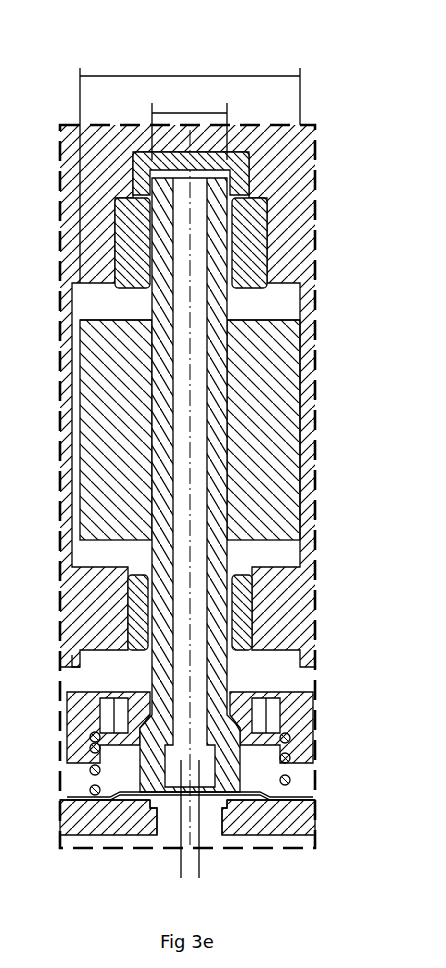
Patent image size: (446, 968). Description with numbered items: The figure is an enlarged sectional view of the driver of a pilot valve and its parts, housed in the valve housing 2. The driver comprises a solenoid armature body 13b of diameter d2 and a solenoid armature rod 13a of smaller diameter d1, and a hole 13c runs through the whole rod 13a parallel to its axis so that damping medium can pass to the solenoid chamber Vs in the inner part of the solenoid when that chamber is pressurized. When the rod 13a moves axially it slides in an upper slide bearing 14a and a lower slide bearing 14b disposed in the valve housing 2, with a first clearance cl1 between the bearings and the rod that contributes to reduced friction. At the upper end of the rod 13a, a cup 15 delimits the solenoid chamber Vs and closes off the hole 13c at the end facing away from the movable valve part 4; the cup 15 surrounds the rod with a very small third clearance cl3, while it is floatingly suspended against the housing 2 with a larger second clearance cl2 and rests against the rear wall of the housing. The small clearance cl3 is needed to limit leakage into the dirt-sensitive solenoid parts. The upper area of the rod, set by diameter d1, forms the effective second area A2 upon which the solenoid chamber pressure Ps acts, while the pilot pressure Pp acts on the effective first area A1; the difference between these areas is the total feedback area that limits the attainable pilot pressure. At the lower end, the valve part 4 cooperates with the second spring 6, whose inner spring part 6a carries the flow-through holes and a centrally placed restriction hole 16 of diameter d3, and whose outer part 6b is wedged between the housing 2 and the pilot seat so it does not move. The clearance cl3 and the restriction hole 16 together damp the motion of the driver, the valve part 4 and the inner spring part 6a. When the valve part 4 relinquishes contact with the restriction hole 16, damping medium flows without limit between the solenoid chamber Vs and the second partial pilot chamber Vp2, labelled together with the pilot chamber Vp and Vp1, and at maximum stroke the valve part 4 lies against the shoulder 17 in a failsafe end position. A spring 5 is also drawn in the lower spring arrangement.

The valve housing 2 is at (63, 128).
The valve part 4 is at (203, 790).
The spring 5 is at (290, 758).
The second spring 6 is at (316, 799).
The inner spring part 6a is at (262, 808).
The outer part of the second spring 6b is at (300, 801).
The solenoid armature rod 13a is at (217, 325).
The solenoid armature body 13b is at (263, 377).
The hole 13c is at (193, 437).
The upper slide bearing 14a is at (247, 240).
The lower slide bearing 14b is at (238, 612).
The cup 15 is at (232, 152).
The restriction hole 16 is at (233, 773).
The shoulder 17 is at (70, 664).
The effective first area A1 is at (207, 803).
The effective second area A2 is at (218, 176).
The first clearance cl1 is at (266, 236).
The second clearance cl2 is at (243, 170).
The third clearance cl3 is at (236, 205).
The diameter of the solenoid armature rod d1 is at (189, 124).
The diameter of the solenoid armature body d2 is at (190, 167).
The diameter of the restriction hole d3 is at (203, 819).
The damping medium pressure in the solenoid chamber Ps is at (116, 301).
The pilot pressure Pp is at (187, 855).
The solenoid chamber Vs is at (147, 200).
The pilot chamber Vp is at (277, 854).
The first partial pilot chamber Vp1 is at (198, 803).
The second partial pilot chamber Vp2 is at (118, 768).